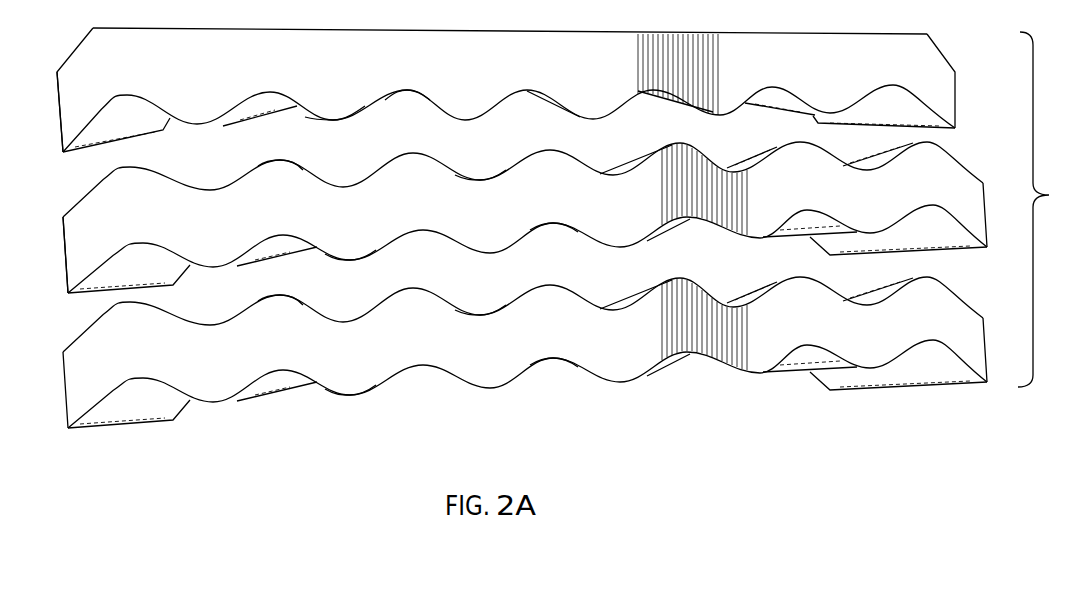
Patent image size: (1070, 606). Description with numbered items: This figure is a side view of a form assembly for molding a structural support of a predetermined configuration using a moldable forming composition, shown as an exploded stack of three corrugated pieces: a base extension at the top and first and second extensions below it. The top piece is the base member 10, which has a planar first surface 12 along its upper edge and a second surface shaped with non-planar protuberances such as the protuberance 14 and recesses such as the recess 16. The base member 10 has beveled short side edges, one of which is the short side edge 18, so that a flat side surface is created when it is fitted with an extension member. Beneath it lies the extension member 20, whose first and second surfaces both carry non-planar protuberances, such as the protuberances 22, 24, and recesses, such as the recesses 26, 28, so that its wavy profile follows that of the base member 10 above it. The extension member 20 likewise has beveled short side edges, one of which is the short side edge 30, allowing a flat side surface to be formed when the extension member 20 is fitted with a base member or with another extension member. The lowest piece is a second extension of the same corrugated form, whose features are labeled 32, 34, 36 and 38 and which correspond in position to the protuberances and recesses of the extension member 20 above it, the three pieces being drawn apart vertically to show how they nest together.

The base member 10 is at (215, 88).
The first surface 12 is at (297, 31).
The protuberance 14 is at (343, 120).
The recess 16 is at (411, 88).
The short side edge 18 is at (63, 100).
The extension member 20 is at (217, 237).
The protuberance 22 is at (290, 160).
The protuberance 24 is at (357, 260).
The recess 26 is at (490, 182).
The recess 28 is at (562, 222).
The short side edge 30 is at (65, 248).
The crest 32 is at (280, 321).
The trough 34 is at (352, 366).
The trough 36 is at (480, 331).
The crest 38 is at (554, 340).